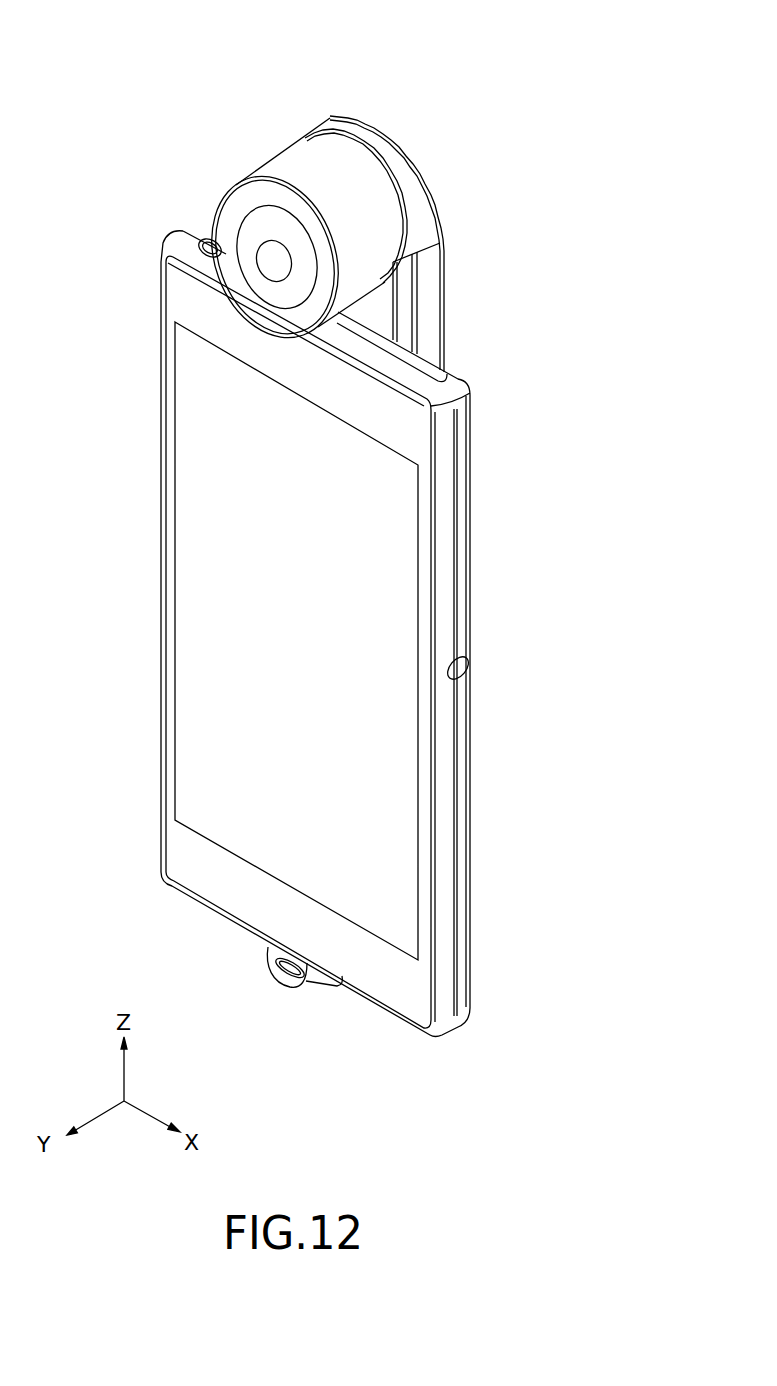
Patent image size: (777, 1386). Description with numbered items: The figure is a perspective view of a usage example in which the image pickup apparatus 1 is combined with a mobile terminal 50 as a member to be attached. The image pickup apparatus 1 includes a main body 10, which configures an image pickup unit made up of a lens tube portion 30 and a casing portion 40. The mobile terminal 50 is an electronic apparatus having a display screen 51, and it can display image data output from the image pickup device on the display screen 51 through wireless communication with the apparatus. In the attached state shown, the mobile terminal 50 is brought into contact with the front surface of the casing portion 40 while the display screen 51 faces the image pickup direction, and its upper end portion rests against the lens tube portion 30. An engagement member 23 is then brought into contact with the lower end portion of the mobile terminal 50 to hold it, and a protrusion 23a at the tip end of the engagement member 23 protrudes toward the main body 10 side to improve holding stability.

The image pickup apparatus 1 is at (514, 177).
The main body 10 is at (368, 45).
The engagement member 23 is at (300, 990).
The protrusion 23a is at (268, 960).
The lens tube portion 30 is at (278, 168).
The casing portion 40 is at (342, 127).
The mobile terminal 50 is at (152, 411).
The display screen 51 is at (195, 570).